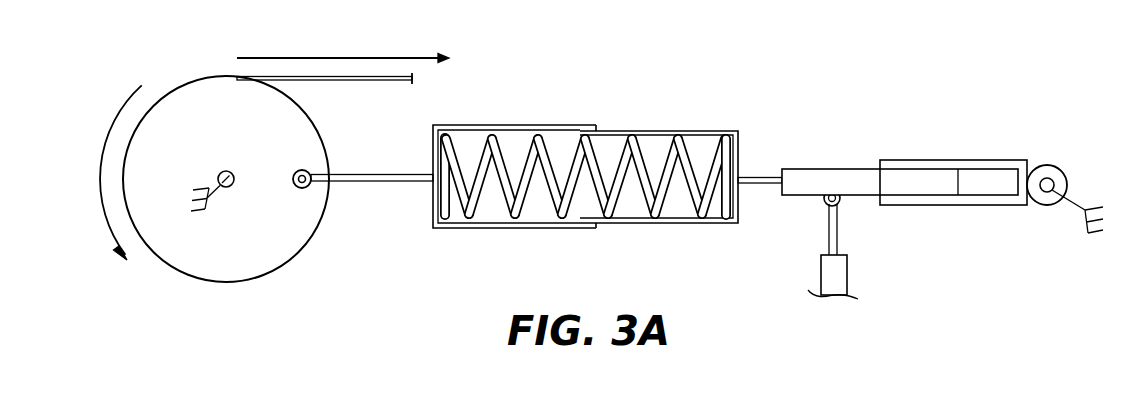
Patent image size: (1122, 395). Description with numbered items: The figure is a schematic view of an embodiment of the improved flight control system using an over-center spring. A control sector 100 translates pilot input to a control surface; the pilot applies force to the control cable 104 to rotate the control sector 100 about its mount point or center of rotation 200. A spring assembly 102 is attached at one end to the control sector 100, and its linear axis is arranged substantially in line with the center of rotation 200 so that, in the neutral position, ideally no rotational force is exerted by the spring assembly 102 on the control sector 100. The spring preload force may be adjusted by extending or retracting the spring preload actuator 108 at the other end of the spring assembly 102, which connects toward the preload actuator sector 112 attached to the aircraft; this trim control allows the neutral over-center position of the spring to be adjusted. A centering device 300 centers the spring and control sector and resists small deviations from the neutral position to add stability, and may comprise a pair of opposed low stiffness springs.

The control sector 100 is at (199, 79).
The control cable 104 is at (343, 80).
The center of rotation 200 is at (222, 172).
The spring assembly 102 is at (567, 98).
The spring preload actuator 108 is at (788, 197).
The centering device 300 is at (847, 278).
The preload actuator sector 112 is at (1063, 172).